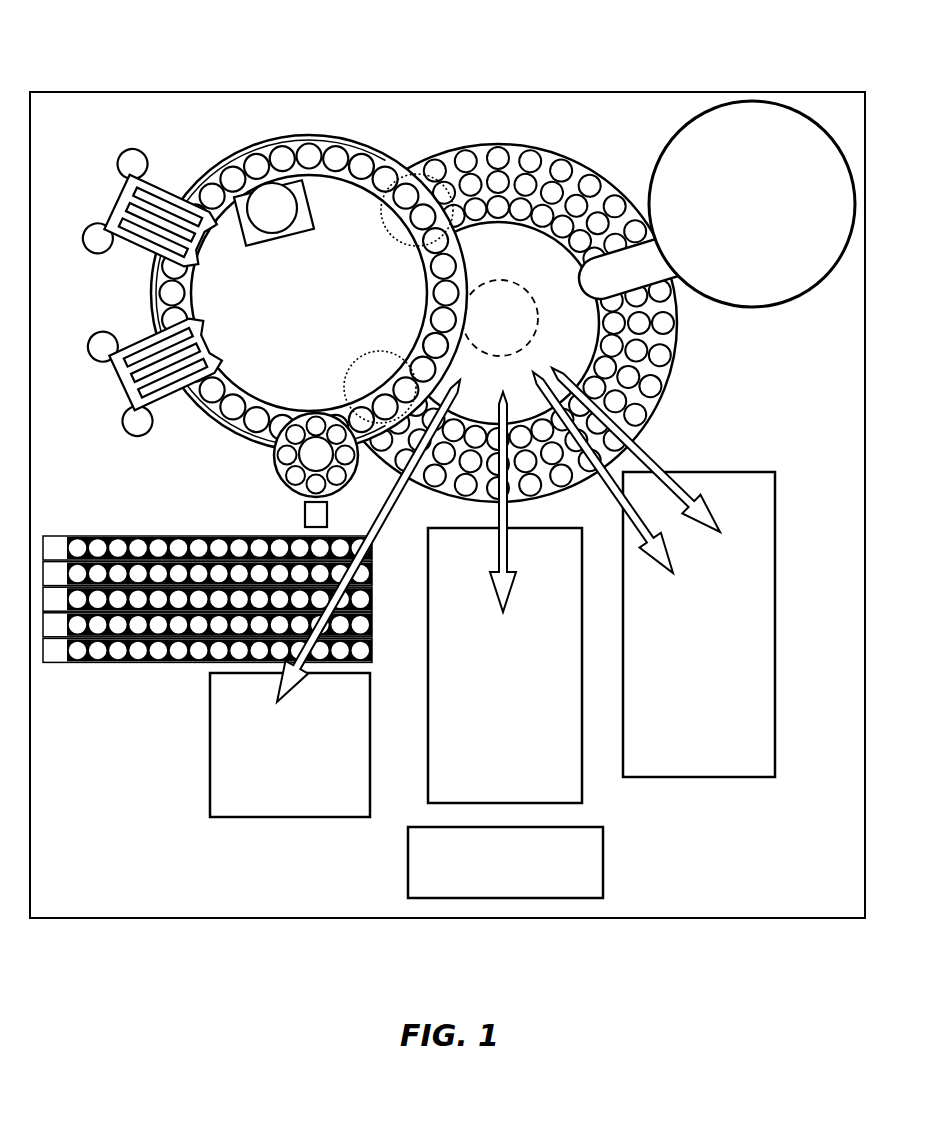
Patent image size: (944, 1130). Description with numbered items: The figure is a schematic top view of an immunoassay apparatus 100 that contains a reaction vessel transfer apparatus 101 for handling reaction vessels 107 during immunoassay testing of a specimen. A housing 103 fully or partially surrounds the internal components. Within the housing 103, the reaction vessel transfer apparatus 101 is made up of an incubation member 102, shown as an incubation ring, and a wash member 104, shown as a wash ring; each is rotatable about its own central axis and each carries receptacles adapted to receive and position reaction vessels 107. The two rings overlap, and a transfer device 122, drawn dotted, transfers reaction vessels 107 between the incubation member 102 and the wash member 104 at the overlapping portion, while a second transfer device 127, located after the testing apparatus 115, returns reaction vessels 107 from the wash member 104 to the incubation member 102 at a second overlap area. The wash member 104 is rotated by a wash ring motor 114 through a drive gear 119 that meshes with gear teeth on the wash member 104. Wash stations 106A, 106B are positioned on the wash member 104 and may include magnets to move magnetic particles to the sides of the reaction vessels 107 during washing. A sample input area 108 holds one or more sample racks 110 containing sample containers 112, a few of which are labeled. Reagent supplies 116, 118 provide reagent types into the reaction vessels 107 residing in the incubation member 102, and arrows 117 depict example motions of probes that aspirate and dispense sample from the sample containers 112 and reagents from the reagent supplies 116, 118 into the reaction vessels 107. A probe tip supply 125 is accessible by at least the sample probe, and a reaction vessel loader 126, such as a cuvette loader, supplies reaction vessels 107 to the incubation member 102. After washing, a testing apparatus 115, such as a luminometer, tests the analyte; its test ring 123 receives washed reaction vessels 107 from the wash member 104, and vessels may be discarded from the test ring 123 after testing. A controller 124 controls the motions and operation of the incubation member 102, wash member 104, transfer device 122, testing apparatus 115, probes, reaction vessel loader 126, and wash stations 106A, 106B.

The immunoassay apparatus 100 is at (337, 78).
The reaction vessel transfer apparatus 101 is at (478, 125).
The incubation member 102 is at (607, 169).
The housing 103 is at (558, 91).
The wash member 104 is at (383, 150).
The wash station 106A is at (105, 192).
The wash station 106B is at (92, 337).
The reaction vessels 107 is at (642, 406).
The sample input area 108 is at (207, 582).
The sample rack 110 is at (102, 665).
The sample containers 112 is at (218, 546).
The wash ring motor 114 is at (244, 227).
The testing apparatus 115 is at (272, 470).
The reagent supply 116 is at (527, 676).
The arrows 117 is at (640, 445).
The reagent supply 118 is at (718, 637).
The drive gear 119 is at (290, 235).
The transfer device 122 is at (394, 238).
The test ring 123 is at (303, 486).
The controller 124 is at (604, 862).
The probe tip supply 125 is at (308, 746).
The reaction vessel loader 126 is at (770, 212).
The second transfer device 127 is at (345, 387).